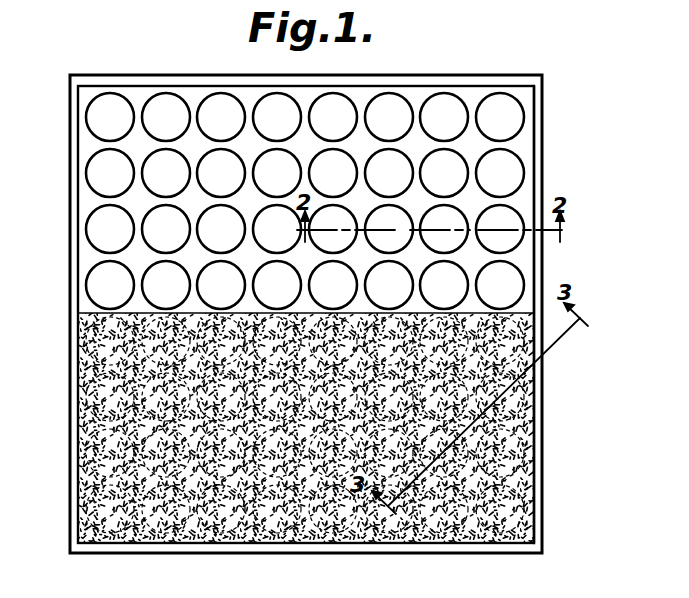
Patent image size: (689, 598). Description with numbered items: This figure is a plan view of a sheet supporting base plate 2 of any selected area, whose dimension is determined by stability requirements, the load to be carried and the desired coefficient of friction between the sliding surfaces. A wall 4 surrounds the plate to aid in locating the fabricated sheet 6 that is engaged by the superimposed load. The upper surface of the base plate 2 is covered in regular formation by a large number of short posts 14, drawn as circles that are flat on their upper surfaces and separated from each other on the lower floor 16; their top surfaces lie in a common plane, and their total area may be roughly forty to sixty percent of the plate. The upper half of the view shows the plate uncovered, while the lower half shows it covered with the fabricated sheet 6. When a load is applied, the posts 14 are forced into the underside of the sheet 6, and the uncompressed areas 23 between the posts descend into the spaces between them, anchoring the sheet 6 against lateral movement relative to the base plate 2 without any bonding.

The supporting base plate 2 is at (546, 375).
The wall 4 is at (541, 412).
The fabricated sheet 6 is at (520, 480).
The short posts 14 is at (513, 125).
The lower floor 16 is at (88, 200).
The uncompressed areas 23 is at (95, 365).